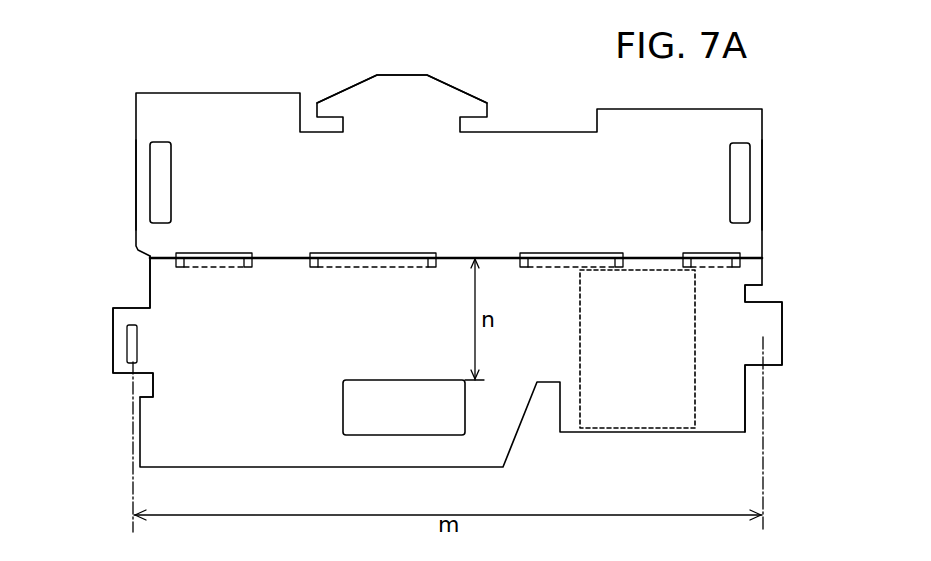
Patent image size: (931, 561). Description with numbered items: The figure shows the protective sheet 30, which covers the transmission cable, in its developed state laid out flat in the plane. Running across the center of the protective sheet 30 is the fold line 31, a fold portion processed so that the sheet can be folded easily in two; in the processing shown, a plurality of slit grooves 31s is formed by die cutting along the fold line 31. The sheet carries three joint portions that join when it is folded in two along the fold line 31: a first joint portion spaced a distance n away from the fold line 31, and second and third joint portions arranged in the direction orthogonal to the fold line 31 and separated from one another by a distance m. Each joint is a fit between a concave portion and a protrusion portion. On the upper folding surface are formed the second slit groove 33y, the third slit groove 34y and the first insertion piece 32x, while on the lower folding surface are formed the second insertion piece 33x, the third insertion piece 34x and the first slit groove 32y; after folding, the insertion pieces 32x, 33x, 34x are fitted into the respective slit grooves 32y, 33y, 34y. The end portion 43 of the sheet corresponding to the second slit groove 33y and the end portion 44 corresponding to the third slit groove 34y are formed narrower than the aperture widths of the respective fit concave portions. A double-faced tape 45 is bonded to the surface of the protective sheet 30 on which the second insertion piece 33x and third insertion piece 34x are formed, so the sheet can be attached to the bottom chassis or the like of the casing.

The protective sheet 30 is at (128, 135).
The fold line 31 is at (290, 256).
The slit grooves 31s is at (358, 255).
The first insertion piece 32x is at (457, 90).
The first slit groove 32y is at (348, 410).
The second insertion piece 33x is at (767, 305).
The second slit groove 33y is at (737, 168).
The third insertion piece 34x is at (122, 313).
The third slit groove 34y is at (165, 185).
The end portion 43 is at (755, 183).
The end portion 44 is at (143, 188).
The double-faced tape 45 is at (695, 415).